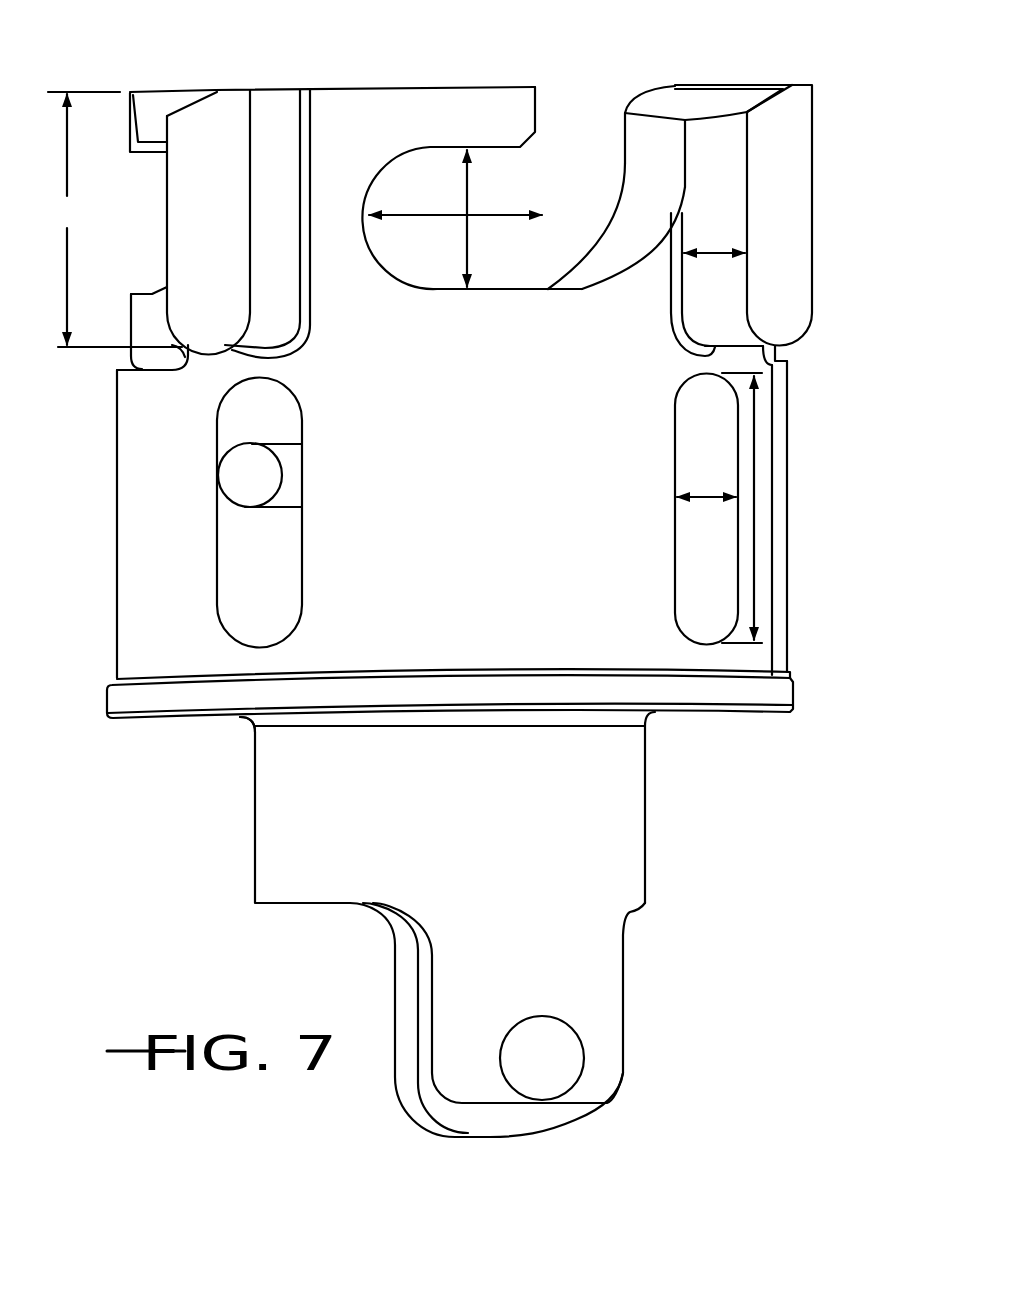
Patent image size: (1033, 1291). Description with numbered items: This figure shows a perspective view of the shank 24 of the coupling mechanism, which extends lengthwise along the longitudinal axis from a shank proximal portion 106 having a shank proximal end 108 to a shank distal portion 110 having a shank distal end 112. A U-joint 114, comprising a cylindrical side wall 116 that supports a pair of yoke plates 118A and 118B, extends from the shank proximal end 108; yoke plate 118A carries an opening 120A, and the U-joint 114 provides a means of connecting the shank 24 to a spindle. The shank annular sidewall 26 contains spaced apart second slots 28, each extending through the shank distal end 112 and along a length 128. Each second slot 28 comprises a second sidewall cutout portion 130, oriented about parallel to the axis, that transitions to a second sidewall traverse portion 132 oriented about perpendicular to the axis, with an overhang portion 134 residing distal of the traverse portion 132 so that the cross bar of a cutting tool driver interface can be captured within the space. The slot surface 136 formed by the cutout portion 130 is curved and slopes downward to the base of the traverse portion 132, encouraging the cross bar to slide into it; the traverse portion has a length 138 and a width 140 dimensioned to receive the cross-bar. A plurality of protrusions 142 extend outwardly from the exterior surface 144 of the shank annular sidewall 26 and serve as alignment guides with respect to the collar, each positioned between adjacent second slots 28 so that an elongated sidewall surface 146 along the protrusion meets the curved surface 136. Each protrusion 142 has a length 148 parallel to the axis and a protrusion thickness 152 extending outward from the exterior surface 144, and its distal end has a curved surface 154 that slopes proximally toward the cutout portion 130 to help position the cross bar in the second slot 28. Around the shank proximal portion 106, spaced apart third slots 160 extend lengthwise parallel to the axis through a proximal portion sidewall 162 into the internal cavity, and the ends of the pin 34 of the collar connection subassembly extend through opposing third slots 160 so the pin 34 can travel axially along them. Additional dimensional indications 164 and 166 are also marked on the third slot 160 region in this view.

The shank 24 is at (826, 108).
The shank annular sidewall 26 is at (487, 317).
The second slot 28 is at (498, 167).
The pin 34 is at (232, 467).
The shank proximal portion 106 is at (603, 610).
The shank proximal end 108 is at (760, 713).
The shank distal portion 110 is at (533, 360).
The shank distal end 112 is at (377, 86).
The U-joint 114 is at (305, 832).
The cylindrical side wall 116 is at (278, 758).
The yoke plate 118A is at (600, 972).
The yoke plate 118B is at (407, 1008).
The opening 120A is at (545, 1057).
The length 128 is at (413, 210).
The second sidewall cutout portion 130 is at (583, 128).
The second sidewall traverse portion 132 is at (442, 203).
The overhang portion 134 is at (462, 138).
The slot surface 136 is at (645, 193).
The length 138 is at (295, 128).
The width 140 is at (455, 218).
The protrusion 142 is at (207, 200).
The exterior surface 144 is at (218, 397).
The elongated sidewall surface 146 is at (723, 165).
The length 148 is at (114, 219).
The protrusion thickness 152 is at (717, 255).
The curved surface 154 is at (684, 115).
The third slot 160 is at (250, 549).
The proximal portion sidewall 162 is at (635, 556).
The slot width 164 is at (710, 500).
The slot length 166 is at (755, 428).